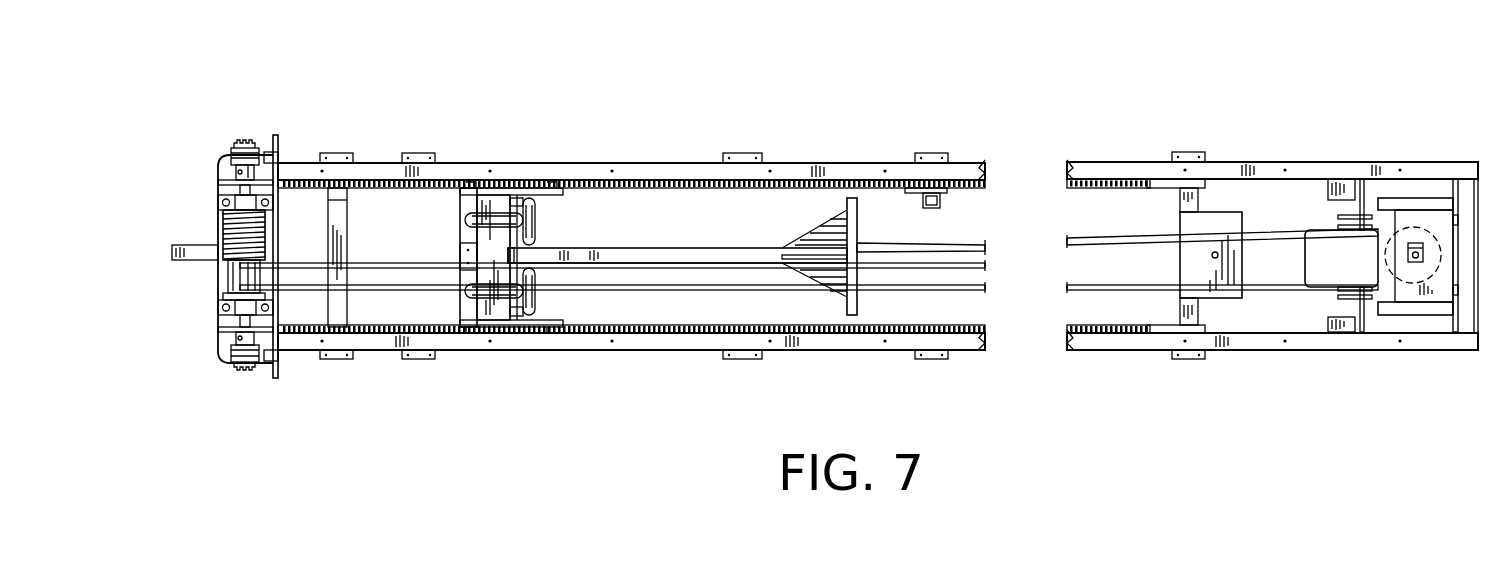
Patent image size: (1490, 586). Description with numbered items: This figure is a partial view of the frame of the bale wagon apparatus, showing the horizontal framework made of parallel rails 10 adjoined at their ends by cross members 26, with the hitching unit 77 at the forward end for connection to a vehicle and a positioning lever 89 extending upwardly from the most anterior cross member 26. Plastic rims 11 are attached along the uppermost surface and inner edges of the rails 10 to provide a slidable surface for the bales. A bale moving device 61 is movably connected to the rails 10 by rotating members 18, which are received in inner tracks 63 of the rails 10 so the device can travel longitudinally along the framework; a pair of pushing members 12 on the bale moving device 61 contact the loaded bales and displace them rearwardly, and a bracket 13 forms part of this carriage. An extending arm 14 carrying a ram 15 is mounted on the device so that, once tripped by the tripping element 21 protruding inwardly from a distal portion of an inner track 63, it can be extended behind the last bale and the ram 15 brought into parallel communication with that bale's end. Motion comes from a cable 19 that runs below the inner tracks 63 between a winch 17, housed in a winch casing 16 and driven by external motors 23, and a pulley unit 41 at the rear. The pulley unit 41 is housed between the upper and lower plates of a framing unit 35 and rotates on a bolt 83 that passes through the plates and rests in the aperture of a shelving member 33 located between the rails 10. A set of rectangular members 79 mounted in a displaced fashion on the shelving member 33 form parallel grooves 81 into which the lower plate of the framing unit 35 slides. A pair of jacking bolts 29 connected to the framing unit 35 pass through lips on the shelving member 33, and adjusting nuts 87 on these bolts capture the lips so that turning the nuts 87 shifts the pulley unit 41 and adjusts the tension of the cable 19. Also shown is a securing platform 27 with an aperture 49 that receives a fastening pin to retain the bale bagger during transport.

The parallel rails 10 is at (672, 163).
The plastic rims 11 is at (622, 163).
The pushing members 12 is at (540, 280).
The bracket 13 is at (465, 305).
The extending arm 14 is at (770, 252).
The ram 15 is at (858, 315).
The winch casing 16 is at (228, 362).
The winch 17 is at (248, 278).
The rotating members 18 is at (530, 190).
The cable 19 is at (220, 222).
The tripping element 21 is at (922, 198).
The external motors 23 is at (248, 135).
The cross members 26 is at (340, 327).
The securing platform 27 is at (1242, 300).
The jacking bolts 29 is at (1332, 190).
The shelving member 33 is at (1476, 200).
The framing unit 35 is at (1453, 195).
The pulley unit 41 is at (1420, 315).
The aperture 49 is at (1212, 255).
The bale moving device 61 is at (506, 380).
The inner tracks 63 is at (673, 327).
The hitching unit 77 is at (200, 262).
The rectangular members 79 is at (1483, 350).
The parallel grooves 81 is at (1373, 192).
The bolt 83 is at (1410, 262).
The adjusting nuts 87 is at (1373, 237).
The positioning lever 89 is at (338, 163).